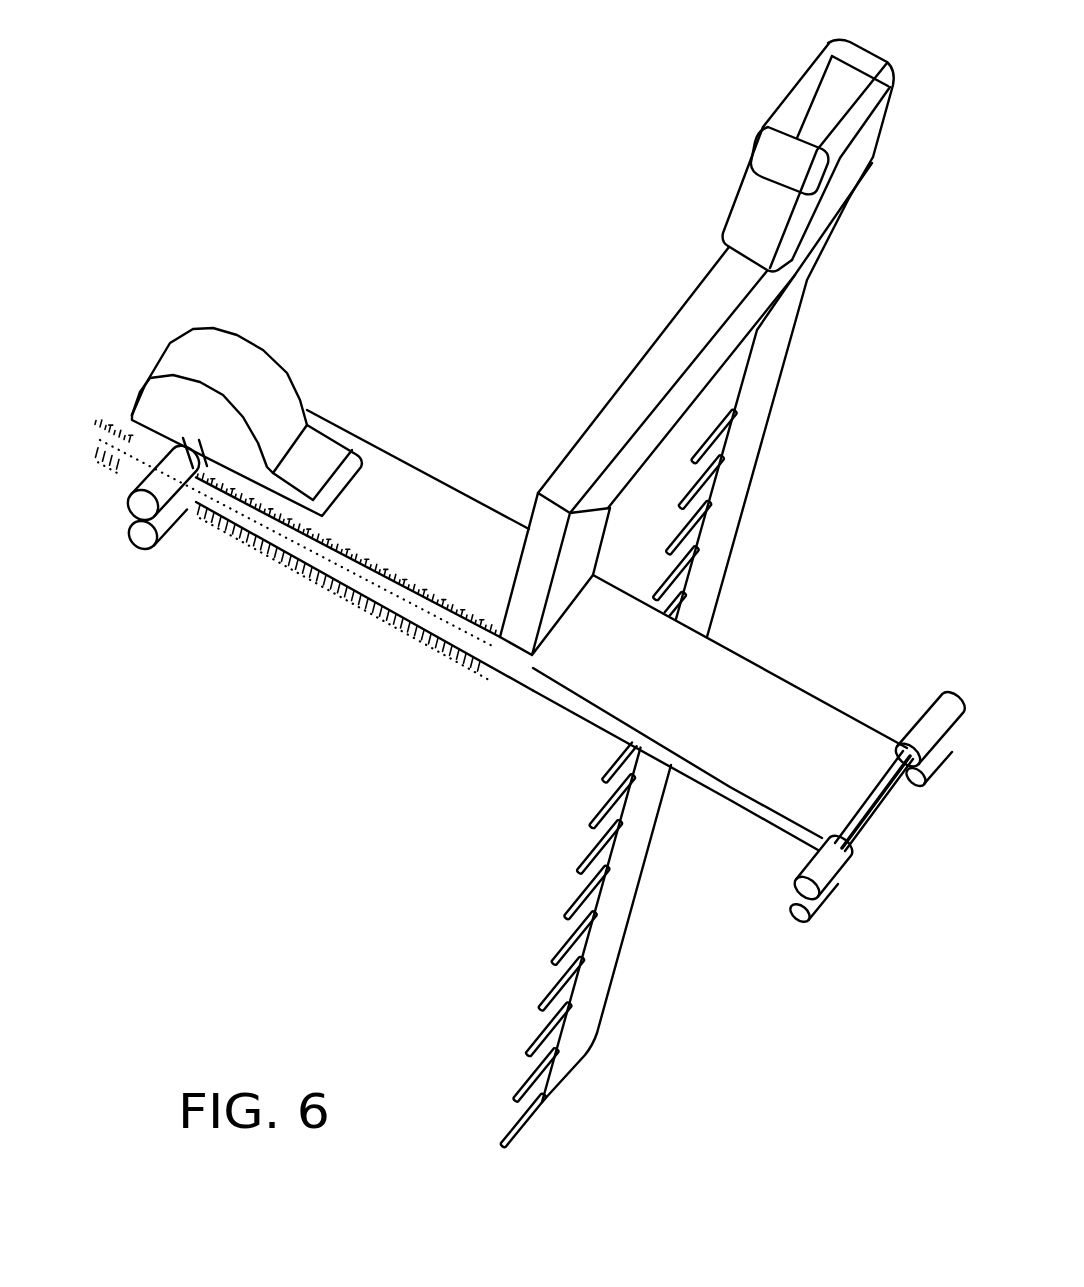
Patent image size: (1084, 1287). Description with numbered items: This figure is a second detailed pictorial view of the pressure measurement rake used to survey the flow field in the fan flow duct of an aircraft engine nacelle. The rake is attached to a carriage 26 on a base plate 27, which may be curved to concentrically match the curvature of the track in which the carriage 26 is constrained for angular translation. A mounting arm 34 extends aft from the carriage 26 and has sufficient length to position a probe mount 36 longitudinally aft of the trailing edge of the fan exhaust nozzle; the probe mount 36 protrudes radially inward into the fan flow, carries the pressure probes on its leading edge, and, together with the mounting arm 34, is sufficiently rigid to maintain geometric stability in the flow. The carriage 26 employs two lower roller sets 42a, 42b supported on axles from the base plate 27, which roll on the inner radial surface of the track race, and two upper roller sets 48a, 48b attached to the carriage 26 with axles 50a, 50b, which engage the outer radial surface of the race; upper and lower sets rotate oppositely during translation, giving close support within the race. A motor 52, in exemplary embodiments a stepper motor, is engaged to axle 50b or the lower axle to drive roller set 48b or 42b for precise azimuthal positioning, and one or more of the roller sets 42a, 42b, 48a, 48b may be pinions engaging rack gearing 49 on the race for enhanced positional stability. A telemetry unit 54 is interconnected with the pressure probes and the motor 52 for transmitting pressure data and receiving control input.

The carriage 26 is at (793, 683).
The base plate 27 is at (440, 523).
The mounting arm 34 is at (650, 362).
The probe mount 36 is at (762, 392).
The lower roller set 42a is at (800, 922).
The lower roller set 42b is at (140, 538).
The upper roller set 48a is at (803, 893).
The upper roller set 48b is at (143, 507).
The rack gearing 49 is at (268, 562).
The axle 50a is at (872, 790).
The axle 50b is at (195, 453).
The motor 52 is at (217, 365).
The telemetry unit 54 is at (830, 98).